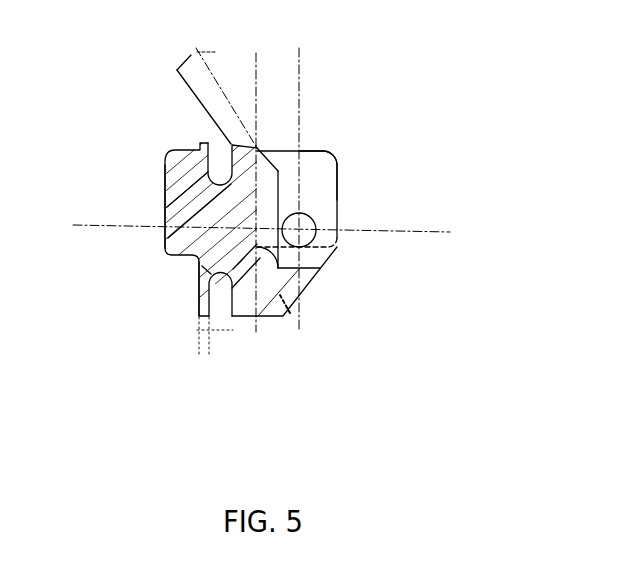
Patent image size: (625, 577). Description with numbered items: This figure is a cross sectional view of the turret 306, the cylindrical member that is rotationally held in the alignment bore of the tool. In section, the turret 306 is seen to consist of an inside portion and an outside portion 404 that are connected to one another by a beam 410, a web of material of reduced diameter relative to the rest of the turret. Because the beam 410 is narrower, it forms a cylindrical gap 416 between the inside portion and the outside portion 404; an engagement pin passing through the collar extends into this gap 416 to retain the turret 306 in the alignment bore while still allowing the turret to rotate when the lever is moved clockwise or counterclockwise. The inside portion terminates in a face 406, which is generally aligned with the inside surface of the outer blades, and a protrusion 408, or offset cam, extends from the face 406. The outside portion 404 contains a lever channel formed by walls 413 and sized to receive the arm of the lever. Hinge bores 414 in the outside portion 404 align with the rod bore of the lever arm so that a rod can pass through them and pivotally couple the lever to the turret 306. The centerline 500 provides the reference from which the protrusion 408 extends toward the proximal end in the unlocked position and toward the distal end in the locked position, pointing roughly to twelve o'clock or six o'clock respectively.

The turret 306 is at (136, 145).
The outside portion 404 is at (288, 314).
The face 406 is at (197, 303).
The protrusion 408 is at (162, 236).
The beam 410 is at (220, 185).
The walls 413 is at (323, 172).
The hinge bores 414 is at (317, 228).
The cylindrical gap 416 is at (220, 305).
The centerline 500 is at (437, 232).